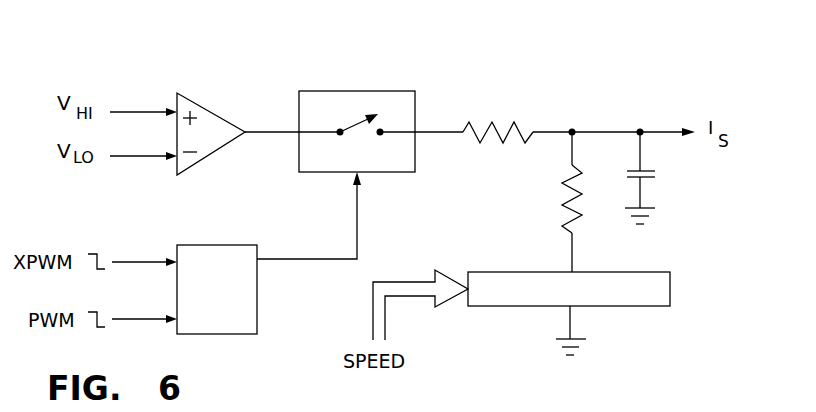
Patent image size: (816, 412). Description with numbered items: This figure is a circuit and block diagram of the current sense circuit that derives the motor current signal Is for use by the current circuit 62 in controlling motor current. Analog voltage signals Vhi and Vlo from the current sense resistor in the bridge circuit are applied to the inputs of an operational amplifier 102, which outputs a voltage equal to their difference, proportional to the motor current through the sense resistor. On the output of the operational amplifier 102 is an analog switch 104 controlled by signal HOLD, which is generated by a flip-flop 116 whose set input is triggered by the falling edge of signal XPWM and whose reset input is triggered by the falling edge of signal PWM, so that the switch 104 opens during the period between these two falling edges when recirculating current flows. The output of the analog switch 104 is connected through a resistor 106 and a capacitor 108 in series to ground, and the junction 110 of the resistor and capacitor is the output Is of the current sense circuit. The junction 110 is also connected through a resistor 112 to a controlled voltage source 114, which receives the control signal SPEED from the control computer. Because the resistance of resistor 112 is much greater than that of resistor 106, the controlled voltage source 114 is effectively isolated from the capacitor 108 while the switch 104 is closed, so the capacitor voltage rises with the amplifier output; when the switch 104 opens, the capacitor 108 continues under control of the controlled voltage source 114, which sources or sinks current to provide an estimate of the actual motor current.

The operational amplifier 102 is at (207, 110).
The analog switch 104 is at (377, 91).
The resistor 106 is at (498, 120).
The capacitor 108 is at (655, 177).
The junction 110 is at (572, 132).
The resistor 112 is at (567, 187).
The controlled voltage source 114 is at (643, 306).
The flip-flop 116 is at (210, 334).
The current circuit 62 is at (718, 411).